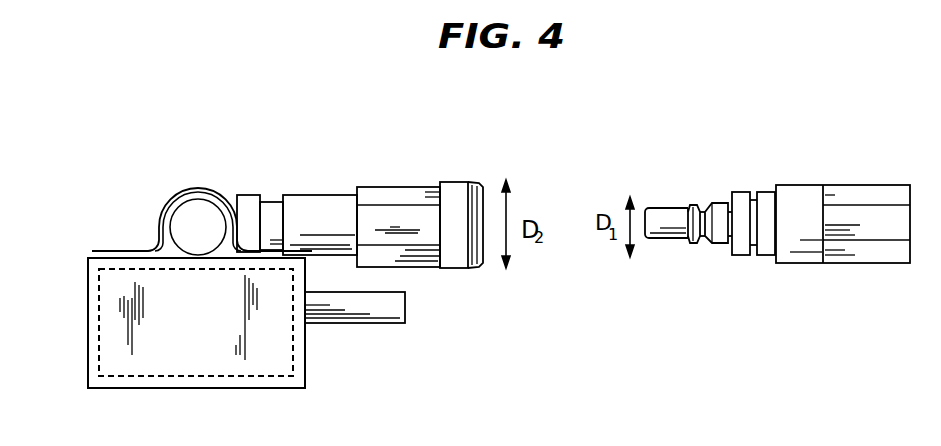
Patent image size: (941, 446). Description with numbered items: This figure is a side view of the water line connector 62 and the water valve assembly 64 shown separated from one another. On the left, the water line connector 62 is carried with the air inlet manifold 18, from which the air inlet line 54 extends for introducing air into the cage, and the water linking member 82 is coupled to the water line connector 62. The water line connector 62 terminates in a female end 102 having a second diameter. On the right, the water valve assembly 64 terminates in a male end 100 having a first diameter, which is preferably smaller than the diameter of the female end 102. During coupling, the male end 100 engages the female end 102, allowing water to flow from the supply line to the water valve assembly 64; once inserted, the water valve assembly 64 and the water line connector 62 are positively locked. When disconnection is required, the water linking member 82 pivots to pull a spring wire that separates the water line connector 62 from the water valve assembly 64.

The air inlet manifold 18 is at (208, 324).
The water linking member 82 is at (182, 193).
The water line connector 62 is at (399, 186).
The female end 102 is at (454, 270).
The air inlet line 54 is at (345, 310).
The male end 100 is at (662, 207).
The water valve assembly 64 is at (792, 185).